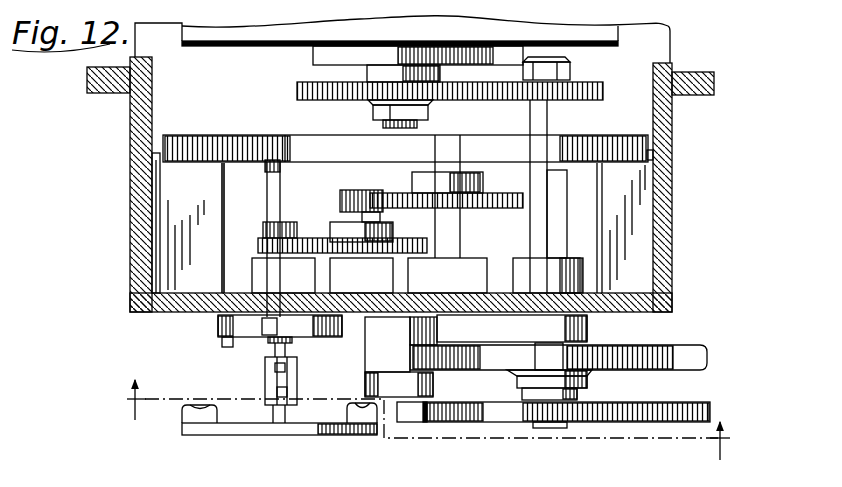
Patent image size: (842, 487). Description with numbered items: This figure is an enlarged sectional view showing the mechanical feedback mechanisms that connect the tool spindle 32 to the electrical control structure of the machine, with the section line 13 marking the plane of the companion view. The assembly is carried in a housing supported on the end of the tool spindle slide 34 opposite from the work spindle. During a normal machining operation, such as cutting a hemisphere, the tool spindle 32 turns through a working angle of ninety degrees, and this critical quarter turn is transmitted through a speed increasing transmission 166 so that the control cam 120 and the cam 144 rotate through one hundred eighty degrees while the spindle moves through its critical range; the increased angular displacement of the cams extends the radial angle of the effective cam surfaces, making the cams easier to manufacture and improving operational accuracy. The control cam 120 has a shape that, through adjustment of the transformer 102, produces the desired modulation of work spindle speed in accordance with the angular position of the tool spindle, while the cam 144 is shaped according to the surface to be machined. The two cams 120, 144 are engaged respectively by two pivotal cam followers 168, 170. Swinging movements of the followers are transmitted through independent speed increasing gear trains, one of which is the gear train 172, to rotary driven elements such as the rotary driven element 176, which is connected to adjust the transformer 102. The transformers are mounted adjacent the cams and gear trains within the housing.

The tool spindle slide 34 is at (120, 124).
The tool spindle 32 is at (312, 60).
The speed increasing transmission 166 is at (597, 76).
The pivotal cam follower 168 is at (555, 329).
The speed increasing gear train 172 is at (492, 188).
The rotary driven element 176 is at (272, 347).
The transformer 102 is at (256, 433).
The pivotal cam follower 170 is at (387, 392).
The control cam 120 is at (662, 350).
The cam 144 is at (672, 406).
The section line 13 is at (431, 420).